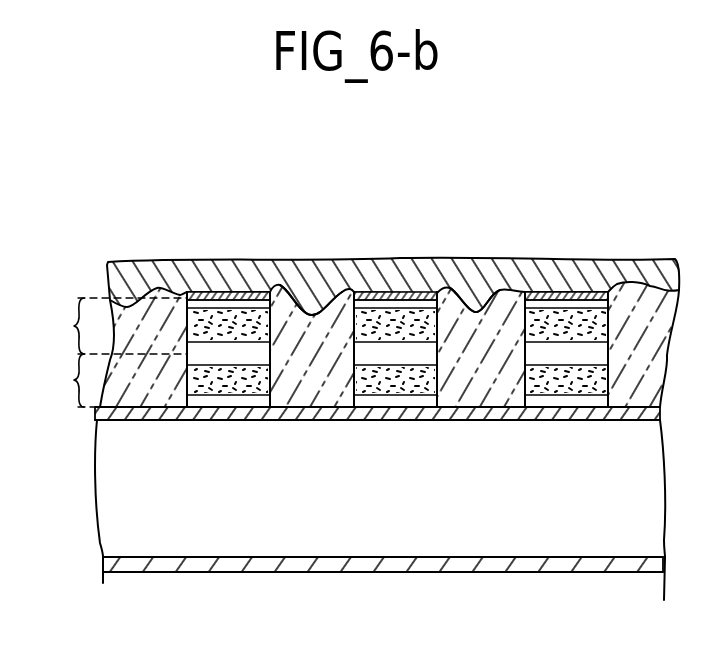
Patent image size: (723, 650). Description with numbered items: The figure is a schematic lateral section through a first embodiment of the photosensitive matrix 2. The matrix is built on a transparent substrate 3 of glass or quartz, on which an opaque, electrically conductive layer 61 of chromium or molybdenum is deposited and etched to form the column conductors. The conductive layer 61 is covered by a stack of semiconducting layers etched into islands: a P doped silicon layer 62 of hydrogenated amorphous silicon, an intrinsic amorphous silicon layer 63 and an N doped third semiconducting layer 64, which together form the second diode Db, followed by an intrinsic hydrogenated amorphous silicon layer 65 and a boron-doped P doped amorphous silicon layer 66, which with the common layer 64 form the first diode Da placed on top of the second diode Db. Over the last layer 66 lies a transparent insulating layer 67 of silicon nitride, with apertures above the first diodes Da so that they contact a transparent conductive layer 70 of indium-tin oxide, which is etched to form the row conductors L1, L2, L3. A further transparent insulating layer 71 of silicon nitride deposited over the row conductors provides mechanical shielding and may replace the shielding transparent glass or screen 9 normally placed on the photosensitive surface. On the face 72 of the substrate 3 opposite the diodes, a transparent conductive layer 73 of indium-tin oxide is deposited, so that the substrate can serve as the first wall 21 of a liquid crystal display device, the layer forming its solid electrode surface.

The photosensitive matrix 2 is at (22, 272).
The substrate 3 is at (98, 525).
The shielding transparent glass or screen 9 is at (392, 274).
The first wall 21 is at (98, 552).
The conductive layer 61 is at (667, 331).
The P doped silicon layer 62 is at (262, 412).
The intrinsic amorphous silicon layer 63 is at (524, 377).
The third semiconducting layer 64 is at (353, 357).
The intrinsic hydrogenated amorphous silicon layer 65 is at (354, 330).
The P doped amorphous silicon layer 66 is at (308, 300).
The insulating layer 67 is at (327, 412).
The conductive transparent layer 70 is at (207, 291).
The transparent insulating layer 71 is at (128, 276).
The face of the substrate 72 is at (98, 570).
The transparent conductive layer 73 is at (140, 572).
The row conductor L1 is at (242, 290).
The row conductor L2 is at (400, 291).
The row conductor L3 is at (553, 291).
The first diode Da is at (102, 326).
The second diode Db is at (102, 380).